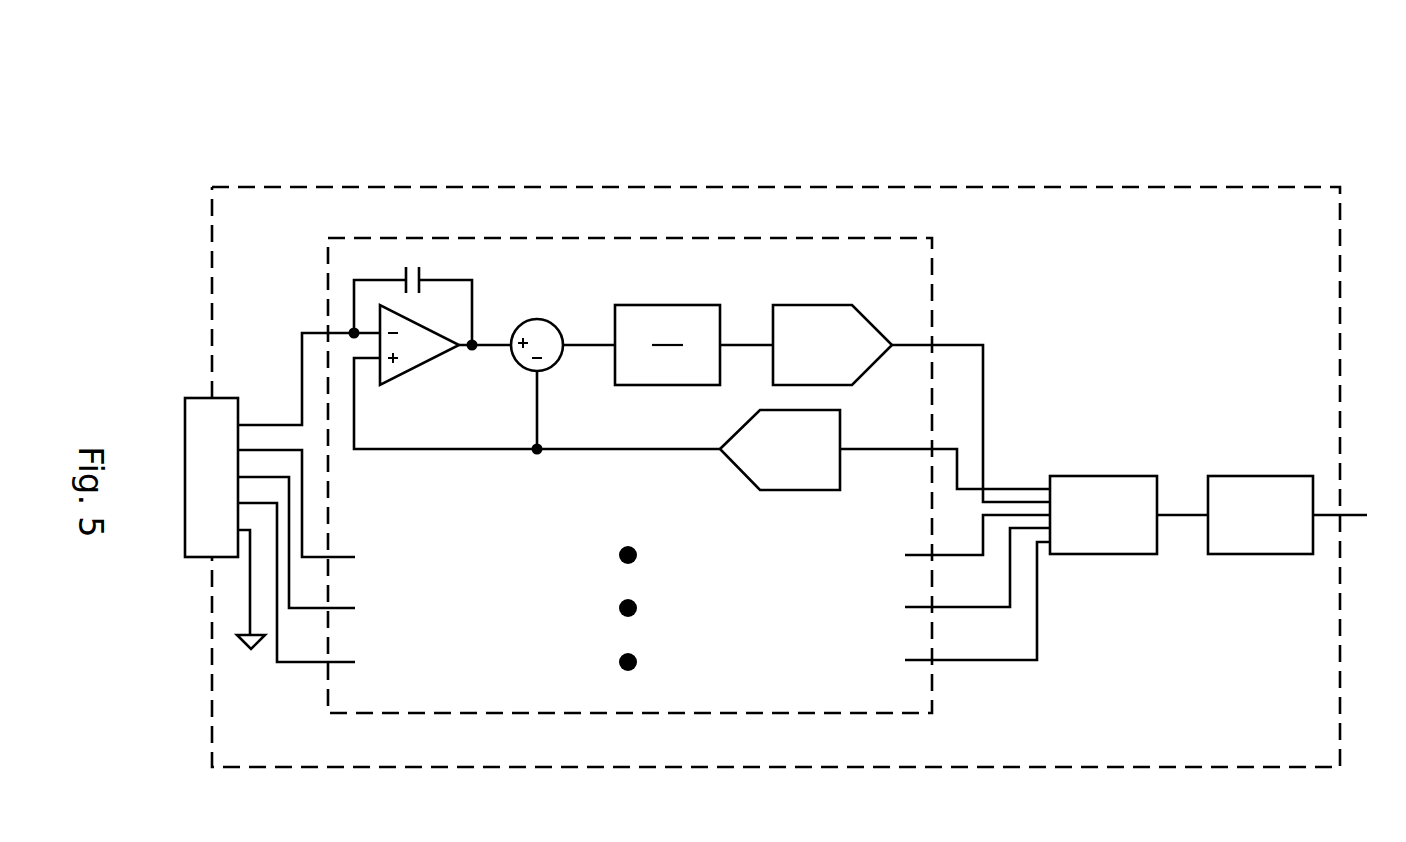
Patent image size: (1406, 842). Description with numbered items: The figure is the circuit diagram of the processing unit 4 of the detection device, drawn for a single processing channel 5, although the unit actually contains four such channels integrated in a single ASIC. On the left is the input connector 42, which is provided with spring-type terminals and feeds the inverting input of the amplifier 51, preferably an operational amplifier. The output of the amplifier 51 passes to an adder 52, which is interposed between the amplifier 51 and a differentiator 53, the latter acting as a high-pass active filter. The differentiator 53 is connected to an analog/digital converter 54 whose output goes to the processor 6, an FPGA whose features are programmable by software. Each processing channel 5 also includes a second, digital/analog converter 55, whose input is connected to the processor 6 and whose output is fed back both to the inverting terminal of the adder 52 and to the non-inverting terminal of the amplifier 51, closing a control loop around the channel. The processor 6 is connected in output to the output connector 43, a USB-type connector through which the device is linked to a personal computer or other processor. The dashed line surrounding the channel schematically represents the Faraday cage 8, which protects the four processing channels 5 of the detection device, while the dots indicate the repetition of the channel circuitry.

The processing unit 4 is at (1112, 152).
The processing channel 5 is at (955, 296).
The processor 6 is at (1108, 480).
The Faraday cage 8 is at (830, 238).
The input connector 42 is at (193, 420).
The output connector 43 is at (1302, 482).
The amplifier 51 is at (410, 362).
The adder 52 is at (537, 328).
The differentiator 53 is at (638, 380).
The analog/digital converter 54 is at (843, 315).
The digital/analog converter 55 is at (798, 480).